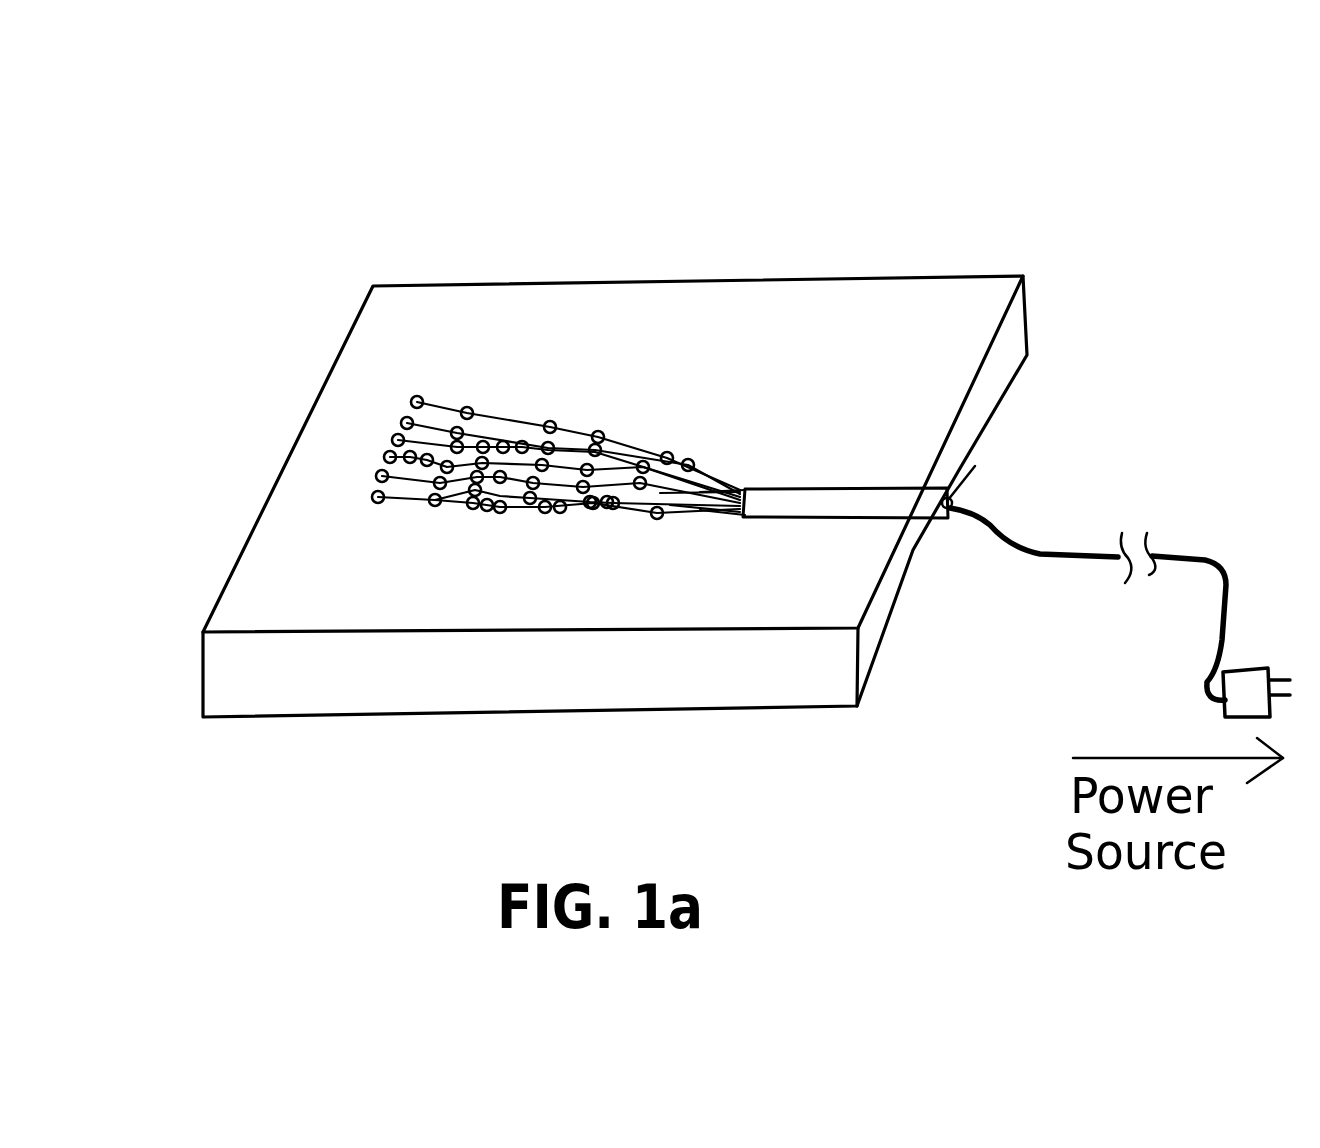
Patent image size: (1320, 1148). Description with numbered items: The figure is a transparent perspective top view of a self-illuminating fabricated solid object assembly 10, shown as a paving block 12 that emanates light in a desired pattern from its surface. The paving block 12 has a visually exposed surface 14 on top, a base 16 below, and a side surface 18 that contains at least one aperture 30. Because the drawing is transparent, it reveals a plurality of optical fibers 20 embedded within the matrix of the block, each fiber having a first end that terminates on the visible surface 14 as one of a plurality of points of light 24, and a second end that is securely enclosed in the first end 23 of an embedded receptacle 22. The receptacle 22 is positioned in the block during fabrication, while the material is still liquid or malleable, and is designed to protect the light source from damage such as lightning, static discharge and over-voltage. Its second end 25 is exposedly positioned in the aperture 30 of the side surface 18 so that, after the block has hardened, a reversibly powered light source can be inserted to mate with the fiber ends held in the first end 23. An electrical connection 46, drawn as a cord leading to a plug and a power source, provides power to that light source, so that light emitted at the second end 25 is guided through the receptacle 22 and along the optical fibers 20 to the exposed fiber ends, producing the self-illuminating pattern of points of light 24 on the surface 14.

The self-illuminating fabricated solid object assembly 10 is at (628, 110).
The fabricated solid block 12 is at (413, 268).
The visible surface 14 is at (548, 325).
The base 16 is at (247, 718).
The surface containing aperture 18 is at (873, 624).
The optical fibers 20 is at (410, 503).
The receptacle 22 is at (862, 488).
The first end of receptacle 23 is at (745, 488).
The points of light 24 is at (598, 437).
The second end of receptacle 25 is at (957, 520).
The aperture 30 is at (975, 436).
The electrical connection 46 is at (1087, 560).